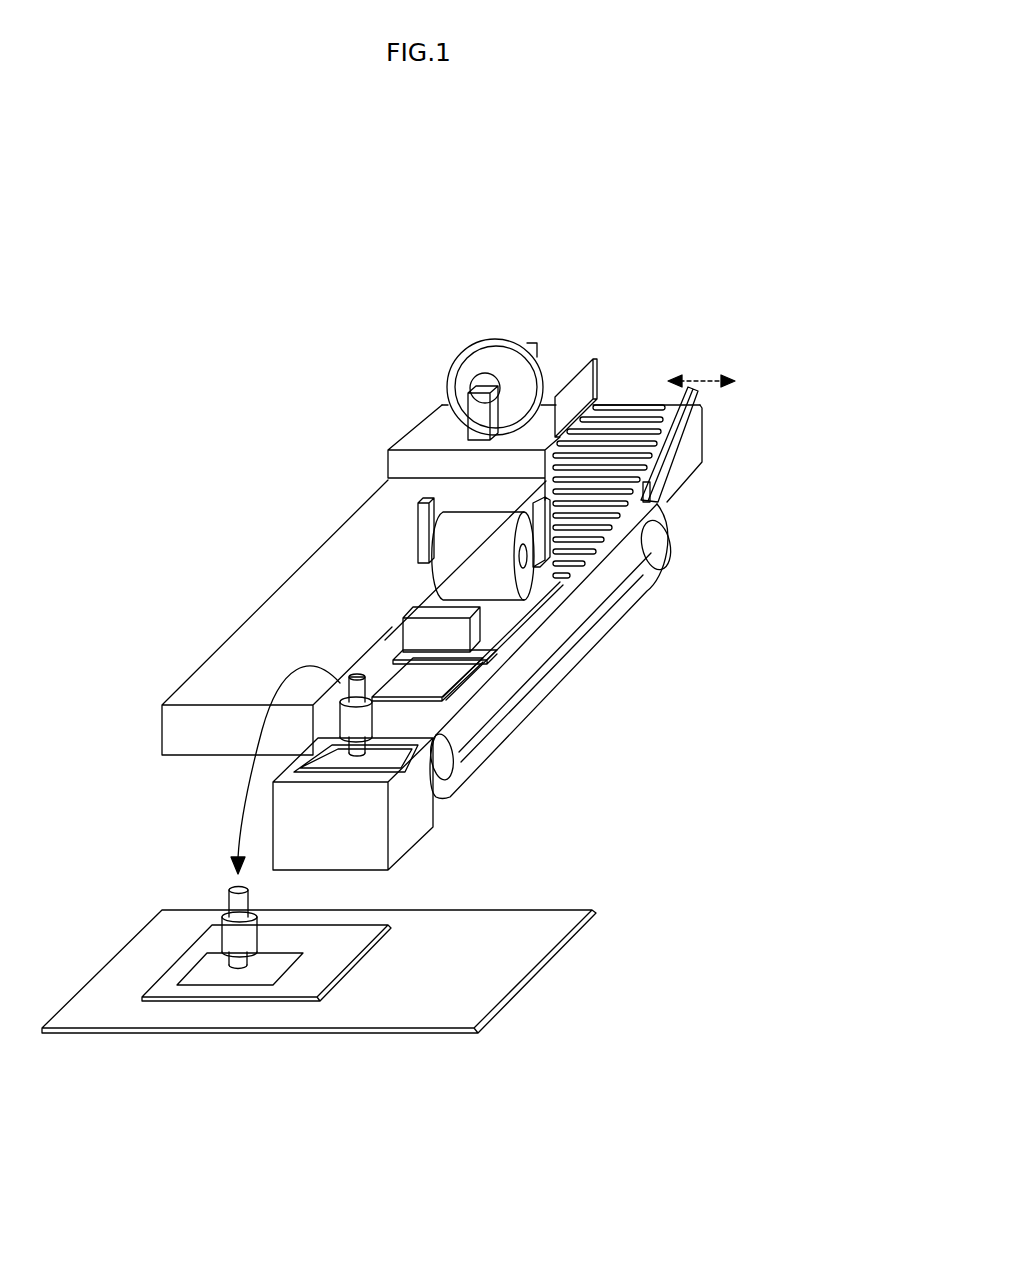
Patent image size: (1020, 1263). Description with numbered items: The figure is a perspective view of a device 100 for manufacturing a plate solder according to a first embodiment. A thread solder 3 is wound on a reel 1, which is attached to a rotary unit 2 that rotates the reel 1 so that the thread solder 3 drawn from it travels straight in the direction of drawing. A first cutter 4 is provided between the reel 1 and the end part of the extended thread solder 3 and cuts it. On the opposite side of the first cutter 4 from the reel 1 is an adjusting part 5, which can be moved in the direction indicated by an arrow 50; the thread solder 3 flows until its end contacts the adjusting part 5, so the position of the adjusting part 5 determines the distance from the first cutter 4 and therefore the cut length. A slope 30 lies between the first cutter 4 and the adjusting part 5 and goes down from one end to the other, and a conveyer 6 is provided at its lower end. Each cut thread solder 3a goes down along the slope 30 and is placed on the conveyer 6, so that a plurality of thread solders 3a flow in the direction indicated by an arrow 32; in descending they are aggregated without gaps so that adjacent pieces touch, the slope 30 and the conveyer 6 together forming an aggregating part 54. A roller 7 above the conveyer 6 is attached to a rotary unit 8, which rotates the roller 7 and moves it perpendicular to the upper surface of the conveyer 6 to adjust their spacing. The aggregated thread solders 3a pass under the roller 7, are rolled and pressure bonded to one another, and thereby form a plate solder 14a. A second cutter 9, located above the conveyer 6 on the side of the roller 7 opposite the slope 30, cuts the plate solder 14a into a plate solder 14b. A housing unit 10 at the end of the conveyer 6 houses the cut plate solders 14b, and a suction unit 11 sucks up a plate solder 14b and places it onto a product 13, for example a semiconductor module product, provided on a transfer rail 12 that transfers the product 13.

The device for manufacturing a plate solder 100 is at (231, 336).
The reel 1 is at (452, 360).
The rotary unit 2 is at (527, 344).
The thread solder 3 is at (647, 402).
The cut thread solder 3a is at (665, 552).
The first cutter 4 is at (578, 365).
The adjusting part 5 is at (705, 408).
The conveyer 6 is at (662, 508).
The roller 7 is at (585, 637).
The rotary unit 8 is at (418, 525).
The second cutter 9 is at (500, 642).
The housing unit 10 is at (365, 825).
The suction unit 11 is at (452, 742).
The transfer rail 12 is at (513, 963).
The product 13 is at (347, 952).
The plate solder 14a is at (540, 638).
The plate solder 14b is at (367, 720).
The slope 30 is at (685, 448).
The arrow 32 is at (605, 478).
The arrow 50 is at (698, 378).
The aggregating part 54 is at (770, 432).